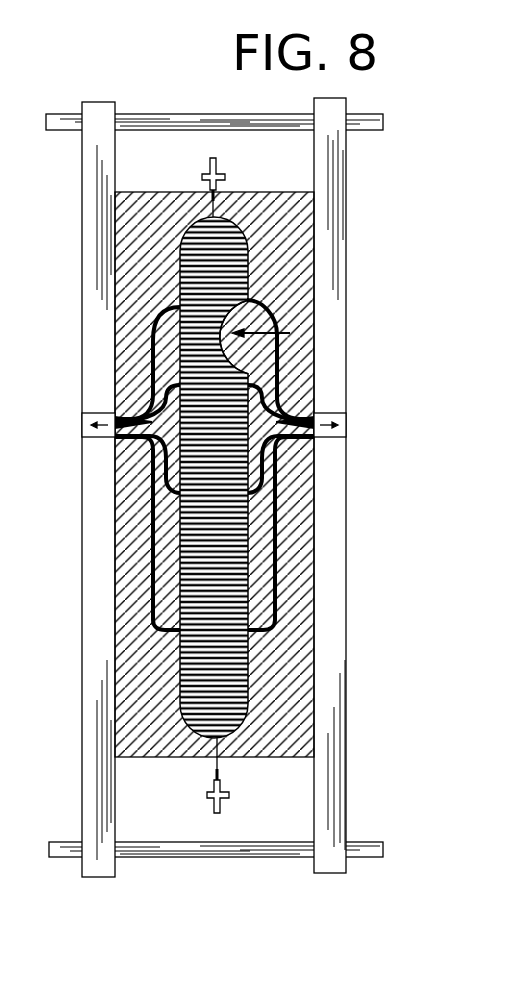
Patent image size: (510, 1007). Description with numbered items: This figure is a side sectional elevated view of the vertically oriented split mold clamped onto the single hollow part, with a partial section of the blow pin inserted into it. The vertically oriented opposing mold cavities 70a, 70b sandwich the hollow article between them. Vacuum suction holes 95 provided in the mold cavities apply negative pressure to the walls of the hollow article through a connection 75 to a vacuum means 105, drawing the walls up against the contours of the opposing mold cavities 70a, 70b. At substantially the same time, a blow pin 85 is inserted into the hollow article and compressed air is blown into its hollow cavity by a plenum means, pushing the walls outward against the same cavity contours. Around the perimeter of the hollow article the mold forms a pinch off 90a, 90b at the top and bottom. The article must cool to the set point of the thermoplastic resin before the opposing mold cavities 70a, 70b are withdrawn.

The mold cavity 70a is at (147, 192).
The mold cavity 70b is at (283, 190).
The connection 75 is at (251, 306).
The blow pin 85 is at (238, 338).
The pinch off 90a is at (216, 212).
The pinch off 90b is at (210, 741).
The vacuum suction holes 95 is at (180, 308).
The vacuum means 105 is at (347, 422).